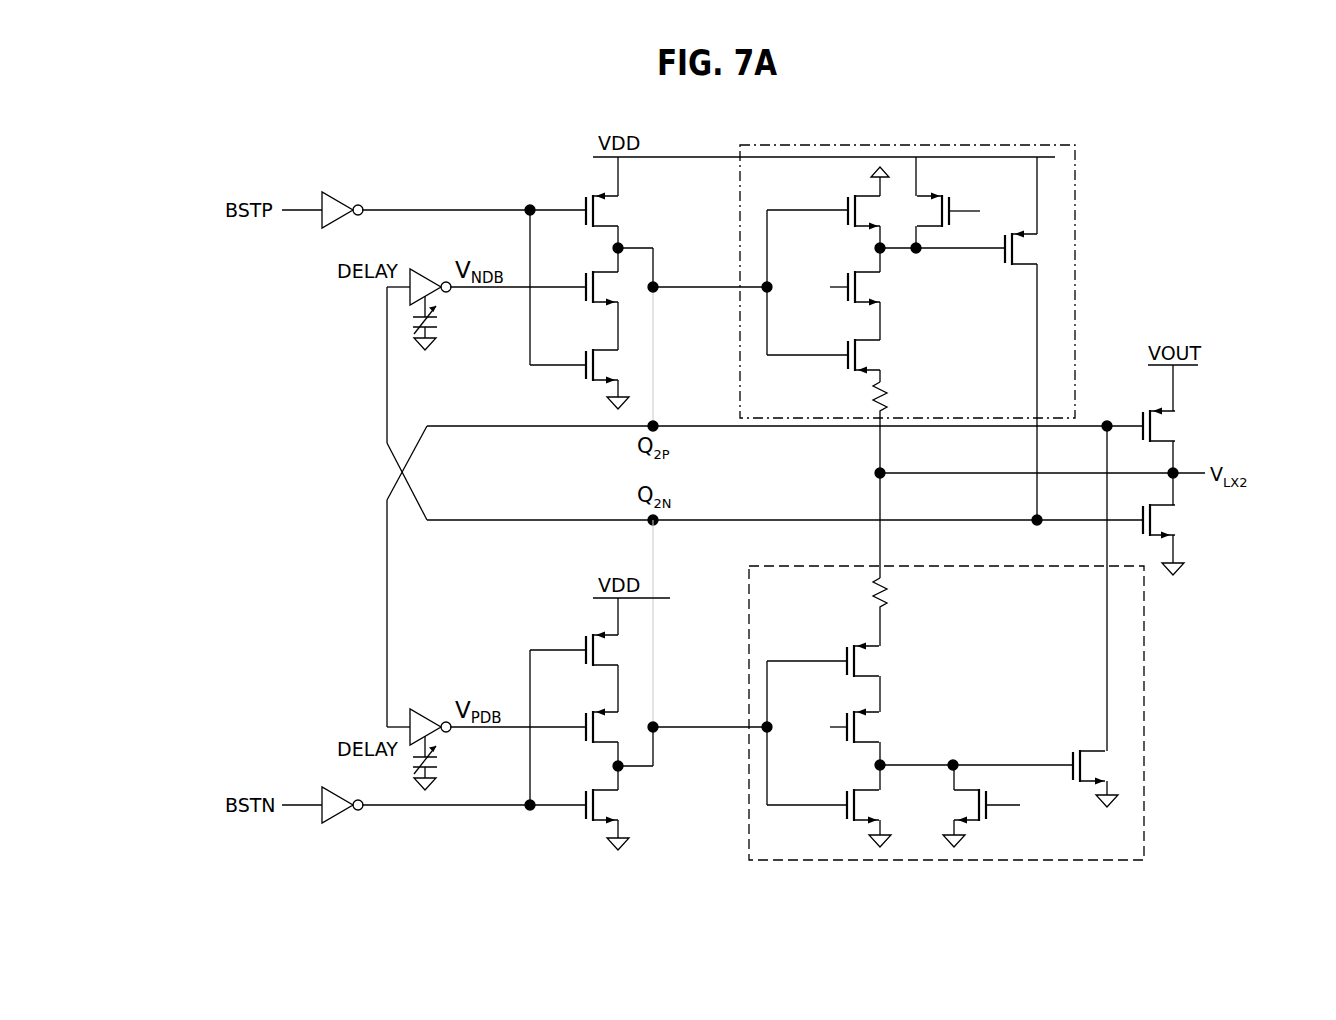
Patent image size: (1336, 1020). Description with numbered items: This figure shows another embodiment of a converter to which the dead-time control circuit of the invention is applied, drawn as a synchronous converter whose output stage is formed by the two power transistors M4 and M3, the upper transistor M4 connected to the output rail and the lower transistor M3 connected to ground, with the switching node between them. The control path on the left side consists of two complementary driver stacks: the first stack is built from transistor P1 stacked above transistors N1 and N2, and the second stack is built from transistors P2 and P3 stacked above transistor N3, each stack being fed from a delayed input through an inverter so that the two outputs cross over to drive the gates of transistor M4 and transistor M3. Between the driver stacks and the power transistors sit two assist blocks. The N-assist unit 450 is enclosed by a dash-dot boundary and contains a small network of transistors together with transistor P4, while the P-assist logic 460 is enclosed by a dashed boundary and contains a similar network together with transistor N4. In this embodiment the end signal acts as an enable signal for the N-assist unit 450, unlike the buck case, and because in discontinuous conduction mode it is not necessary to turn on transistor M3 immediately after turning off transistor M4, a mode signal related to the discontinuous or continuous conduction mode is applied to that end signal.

The N-assist unit 450 is at (946, 347).
The P-assist logic 460 is at (985, 729).
The first PMOS transistor P1 is at (615, 210).
The first NMOS transistor N1 is at (615, 288).
The second NMOS transistor N2 is at (615, 366).
The second PMOS transistor P2 is at (615, 649).
The third PMOS transistor P3 is at (615, 726).
The third NMOS transistor N3 is at (615, 806).
The fourth PMOS transistor P4 is at (1035, 249).
The fourth NMOS transistor N4 is at (1104, 767).
The transistor M3 is at (1173, 521).
The transistor M4 is at (1173, 426).